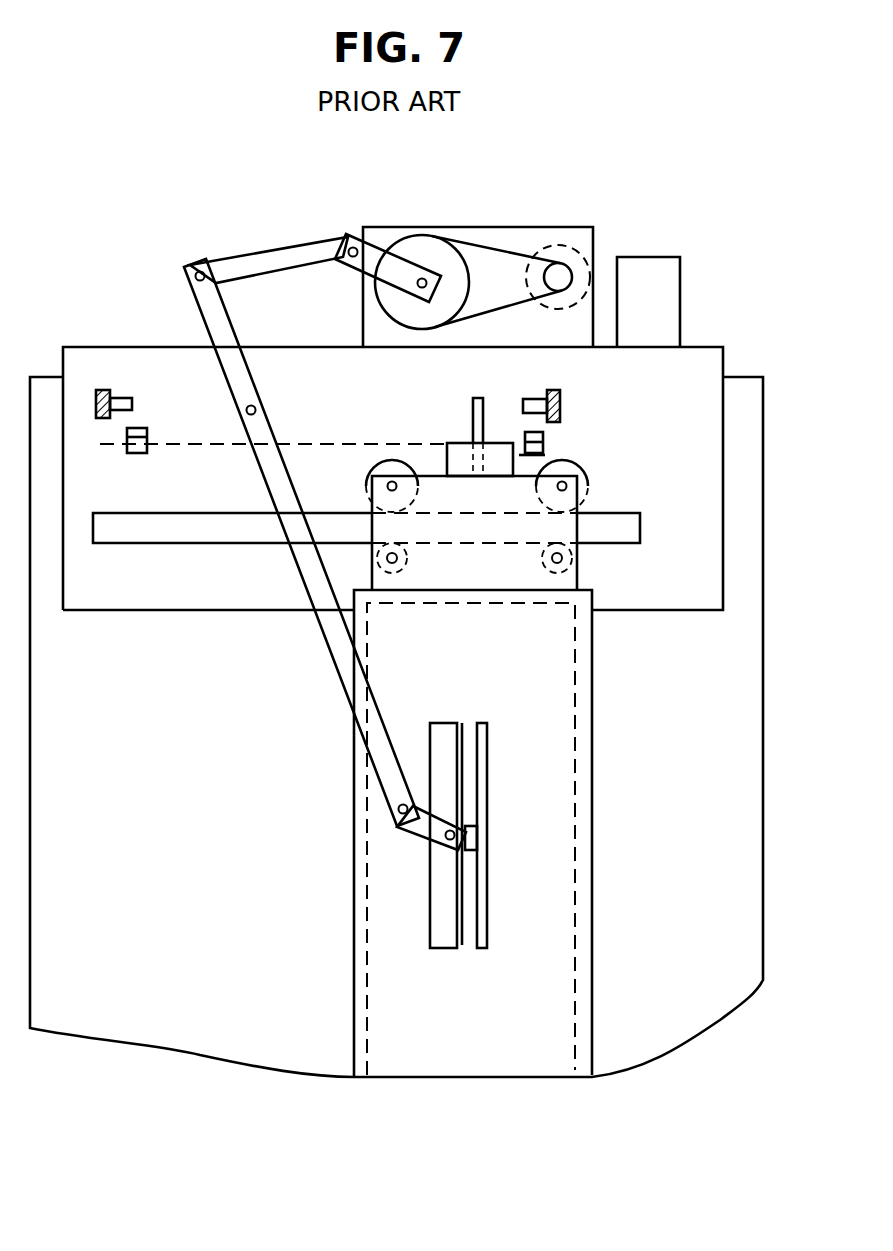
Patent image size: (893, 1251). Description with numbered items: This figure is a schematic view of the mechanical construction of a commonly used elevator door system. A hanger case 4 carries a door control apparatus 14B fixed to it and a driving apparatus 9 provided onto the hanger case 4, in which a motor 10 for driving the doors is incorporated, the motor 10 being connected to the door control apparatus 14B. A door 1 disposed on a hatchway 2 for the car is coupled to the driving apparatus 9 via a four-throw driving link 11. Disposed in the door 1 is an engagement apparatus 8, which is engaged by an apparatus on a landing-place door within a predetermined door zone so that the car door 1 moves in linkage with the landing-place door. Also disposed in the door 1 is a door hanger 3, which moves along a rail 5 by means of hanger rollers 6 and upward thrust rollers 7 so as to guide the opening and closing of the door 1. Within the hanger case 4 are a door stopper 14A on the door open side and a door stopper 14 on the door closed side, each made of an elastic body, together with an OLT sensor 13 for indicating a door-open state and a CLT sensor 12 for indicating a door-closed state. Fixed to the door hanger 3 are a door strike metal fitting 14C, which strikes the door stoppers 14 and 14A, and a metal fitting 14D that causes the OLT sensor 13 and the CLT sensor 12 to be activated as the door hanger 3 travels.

The door 1 is at (555, 773).
The hatchway 2 is at (370, 958).
The door hanger 3 is at (430, 476).
The hanger case 4 is at (690, 347).
The rail 5 is at (175, 543).
The hanger rollers 6 is at (590, 484).
The upward thrust rollers 7 is at (572, 556).
The engagement apparatus 8 is at (470, 948).
The driving apparatus 9 is at (470, 227).
The motor 10 is at (580, 228).
The four-throw driving link 11 is at (248, 428).
The CLT sensor 12 is at (552, 442).
The OLT sensor 13 is at (136, 455).
The door stopper 14 is at (540, 395).
The door stopper 14A is at (122, 398).
The door control apparatus 14B is at (640, 257).
The door strike metal fitting 14C is at (478, 398).
The metal fitting 14D is at (517, 462).